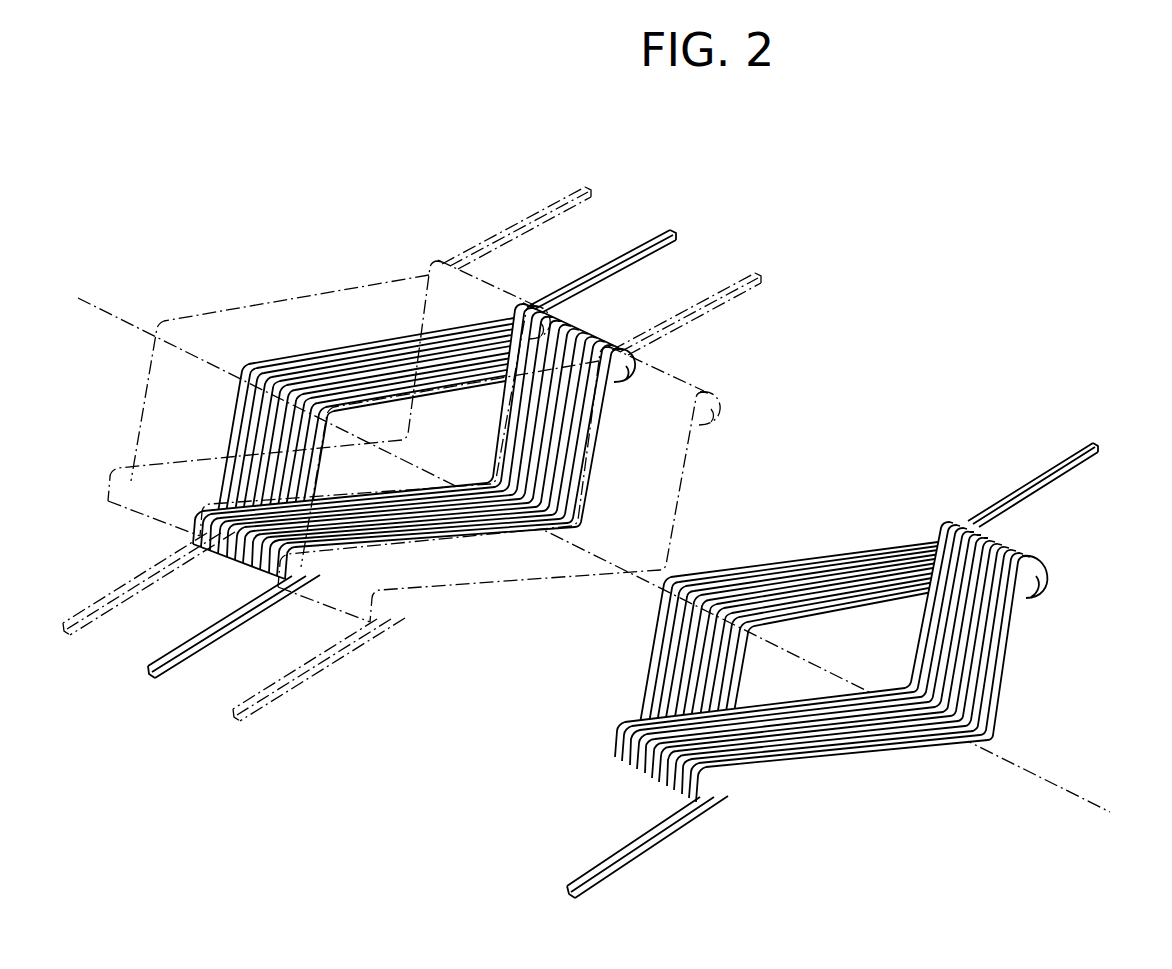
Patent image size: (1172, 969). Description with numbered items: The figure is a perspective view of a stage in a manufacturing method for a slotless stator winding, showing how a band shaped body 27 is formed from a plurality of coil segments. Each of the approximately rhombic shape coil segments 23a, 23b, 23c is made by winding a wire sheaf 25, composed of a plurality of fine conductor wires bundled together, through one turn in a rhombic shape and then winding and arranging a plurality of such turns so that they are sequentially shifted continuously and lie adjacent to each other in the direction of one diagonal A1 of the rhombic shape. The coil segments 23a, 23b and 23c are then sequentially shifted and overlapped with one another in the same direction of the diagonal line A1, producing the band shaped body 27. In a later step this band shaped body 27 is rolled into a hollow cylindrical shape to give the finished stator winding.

The band shaped body 27 is at (446, 221).
The coil segment 23a is at (610, 334).
The coil segment 23b is at (697, 378).
The coil segment 23c is at (522, 287).
The wire sheaf 25 is at (612, 739).
The diagonal A1 is at (1039, 776).